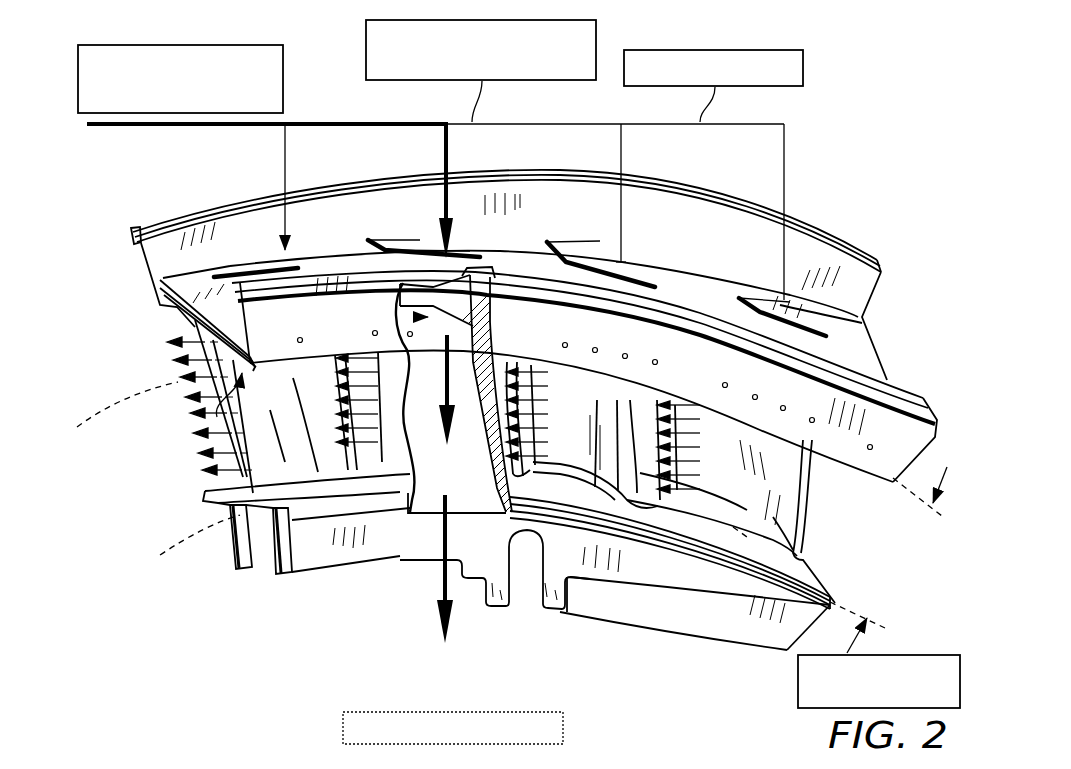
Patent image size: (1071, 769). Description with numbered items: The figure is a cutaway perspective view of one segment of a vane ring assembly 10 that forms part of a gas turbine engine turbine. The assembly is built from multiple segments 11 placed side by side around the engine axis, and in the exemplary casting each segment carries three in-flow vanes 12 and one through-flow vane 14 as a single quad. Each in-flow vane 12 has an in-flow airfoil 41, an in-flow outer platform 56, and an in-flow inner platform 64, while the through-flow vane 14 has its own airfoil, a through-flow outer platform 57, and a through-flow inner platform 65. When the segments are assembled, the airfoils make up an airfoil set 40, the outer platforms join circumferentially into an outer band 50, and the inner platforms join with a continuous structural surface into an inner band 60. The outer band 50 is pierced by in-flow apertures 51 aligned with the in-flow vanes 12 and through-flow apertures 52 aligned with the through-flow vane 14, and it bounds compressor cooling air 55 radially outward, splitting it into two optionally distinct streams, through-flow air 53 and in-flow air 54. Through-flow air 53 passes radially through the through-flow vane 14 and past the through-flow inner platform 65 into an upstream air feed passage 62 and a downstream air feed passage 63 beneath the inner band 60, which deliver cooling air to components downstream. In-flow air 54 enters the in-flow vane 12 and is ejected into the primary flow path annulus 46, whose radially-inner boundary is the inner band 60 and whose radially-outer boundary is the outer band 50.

The vane ring assembly 10 is at (122, 228).
The segments 11 is at (137, 265).
The in-flow vane 12 is at (215, 240).
The through-flow vane 14 is at (478, 218).
The airfoil set 40 is at (870, 514).
The in-flow airfoil 41 is at (807, 523).
The flow path annulus 46 is at (907, 655).
The outer band 50 is at (173, 328).
The in-flow apertures 51 is at (245, 265).
The through-flow apertures 52 is at (407, 258).
The through-flow air 53 is at (543, 20).
The in-flow air 54 is at (750, 48).
The compressor cooling air 55 is at (233, 44).
The in-flow outer platform 56 is at (205, 426).
The through-flow outer platform 57 is at (426, 314).
The inner band 60 is at (230, 552).
The upstream air feed passage 62 is at (523, 667).
The downstream air feed passage 63 is at (356, 552).
The in-flow inner platform 64 is at (313, 479).
The through-flow inner platform 65 is at (427, 478).